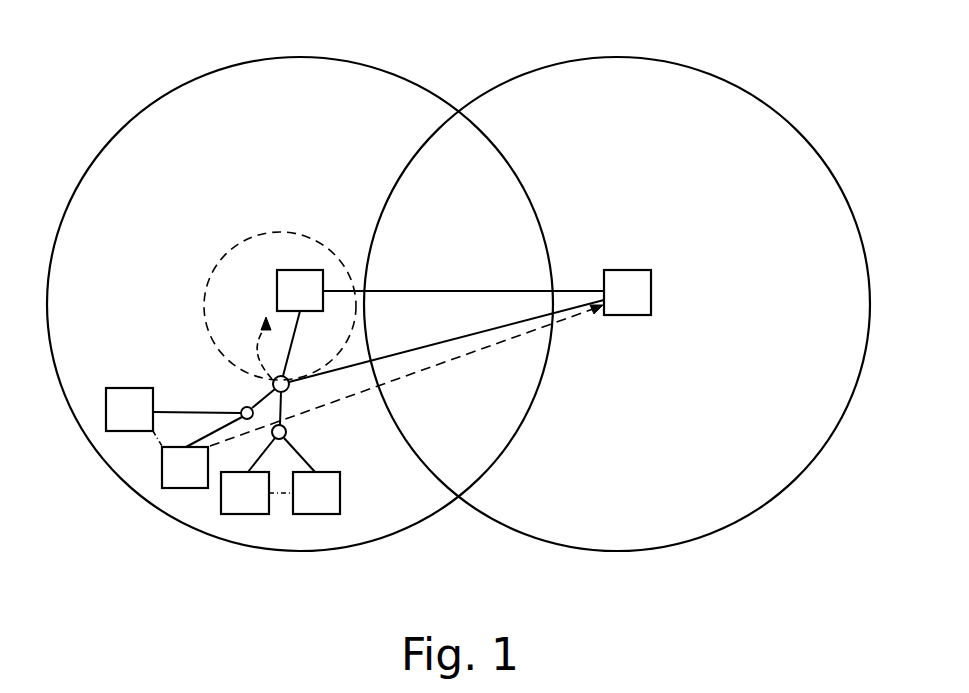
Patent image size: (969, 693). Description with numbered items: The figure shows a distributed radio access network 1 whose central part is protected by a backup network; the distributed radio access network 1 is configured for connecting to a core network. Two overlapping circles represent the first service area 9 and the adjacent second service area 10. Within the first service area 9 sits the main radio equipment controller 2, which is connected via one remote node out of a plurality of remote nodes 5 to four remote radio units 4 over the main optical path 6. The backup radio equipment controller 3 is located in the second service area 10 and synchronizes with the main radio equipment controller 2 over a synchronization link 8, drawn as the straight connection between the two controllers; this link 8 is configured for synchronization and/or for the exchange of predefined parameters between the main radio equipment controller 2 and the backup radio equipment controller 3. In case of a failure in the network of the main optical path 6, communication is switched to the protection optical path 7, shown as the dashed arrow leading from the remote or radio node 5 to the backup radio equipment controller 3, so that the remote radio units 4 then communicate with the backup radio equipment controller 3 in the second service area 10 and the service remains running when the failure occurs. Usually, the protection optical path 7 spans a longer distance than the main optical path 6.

The distributed radio access network 1 is at (458, 280).
The main radio equipment controller 2 is at (302, 270).
The backup radio equipment controller 3 is at (642, 290).
The remote radio units 4 is at (132, 422).
The remote nodes 5 is at (290, 432).
The main optical path 6 is at (295, 390).
The protection optical path 7 is at (528, 320).
The synchronization link 8 is at (450, 290).
The first service area 9 is at (358, 92).
The second service area 10 is at (698, 92).